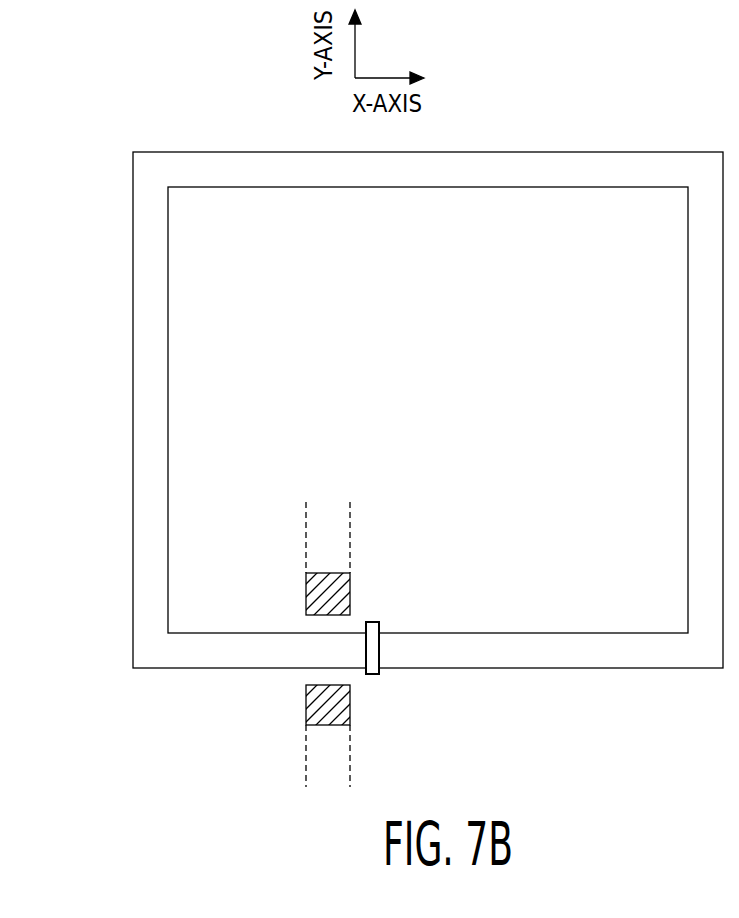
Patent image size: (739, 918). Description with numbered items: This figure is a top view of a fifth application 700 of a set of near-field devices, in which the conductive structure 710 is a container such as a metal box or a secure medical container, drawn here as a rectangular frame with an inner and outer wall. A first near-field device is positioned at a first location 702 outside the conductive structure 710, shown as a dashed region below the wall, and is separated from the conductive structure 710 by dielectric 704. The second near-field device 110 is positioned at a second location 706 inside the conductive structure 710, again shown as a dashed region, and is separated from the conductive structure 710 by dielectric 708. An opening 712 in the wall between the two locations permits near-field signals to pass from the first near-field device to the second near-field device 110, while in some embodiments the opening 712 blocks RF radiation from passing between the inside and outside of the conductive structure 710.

The fifth application 700 is at (111, 149).
The conductive structure 710 is at (617, 152).
The second location 706 is at (350, 497).
The second near-field device 110 is at (352, 583).
The dielectric 708 is at (312, 625).
The opening 712 is at (380, 645).
The dielectric 704 is at (310, 675).
The first location 702 is at (350, 795).